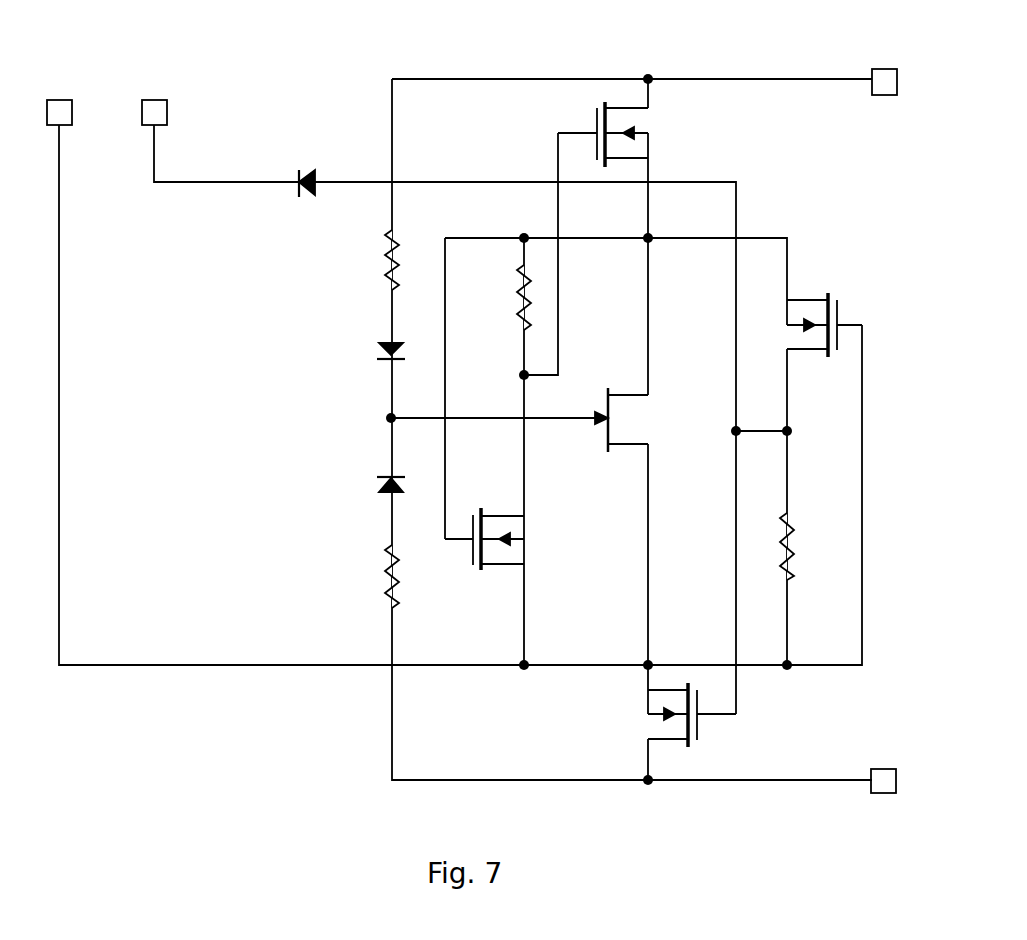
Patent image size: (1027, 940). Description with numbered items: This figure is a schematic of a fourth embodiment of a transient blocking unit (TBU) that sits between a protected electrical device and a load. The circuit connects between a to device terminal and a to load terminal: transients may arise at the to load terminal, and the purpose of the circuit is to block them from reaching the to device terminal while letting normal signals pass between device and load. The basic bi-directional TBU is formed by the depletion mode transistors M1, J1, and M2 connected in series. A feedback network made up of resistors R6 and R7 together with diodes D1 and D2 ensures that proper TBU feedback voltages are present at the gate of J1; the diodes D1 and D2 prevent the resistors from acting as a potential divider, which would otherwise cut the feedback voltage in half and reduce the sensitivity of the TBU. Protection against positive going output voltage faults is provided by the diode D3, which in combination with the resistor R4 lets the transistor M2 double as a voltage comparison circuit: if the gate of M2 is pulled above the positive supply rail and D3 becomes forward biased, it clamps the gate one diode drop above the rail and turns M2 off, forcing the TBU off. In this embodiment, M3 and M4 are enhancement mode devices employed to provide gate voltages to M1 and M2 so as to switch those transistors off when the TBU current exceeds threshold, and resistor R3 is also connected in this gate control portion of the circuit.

The to device terminal to device is at (884, 68).
The to load terminal to load is at (881, 795).
The diode D3 is at (300, 170).
The depletion mode transistor M1 is at (603, 102).
The resistor R6 is at (393, 258).
The diode D1 is at (377, 348).
The diode D2 is at (380, 488).
The resistor R7 is at (384, 580).
The resistor R3 is at (520, 315).
The resistor R4 is at (790, 560).
The depletion mode transistor J1 is at (605, 400).
The enhancement mode transistor M3 is at (478, 572).
The enhancement mode transistor M4 is at (828, 293).
The depletion mode transistor M2 is at (697, 745).